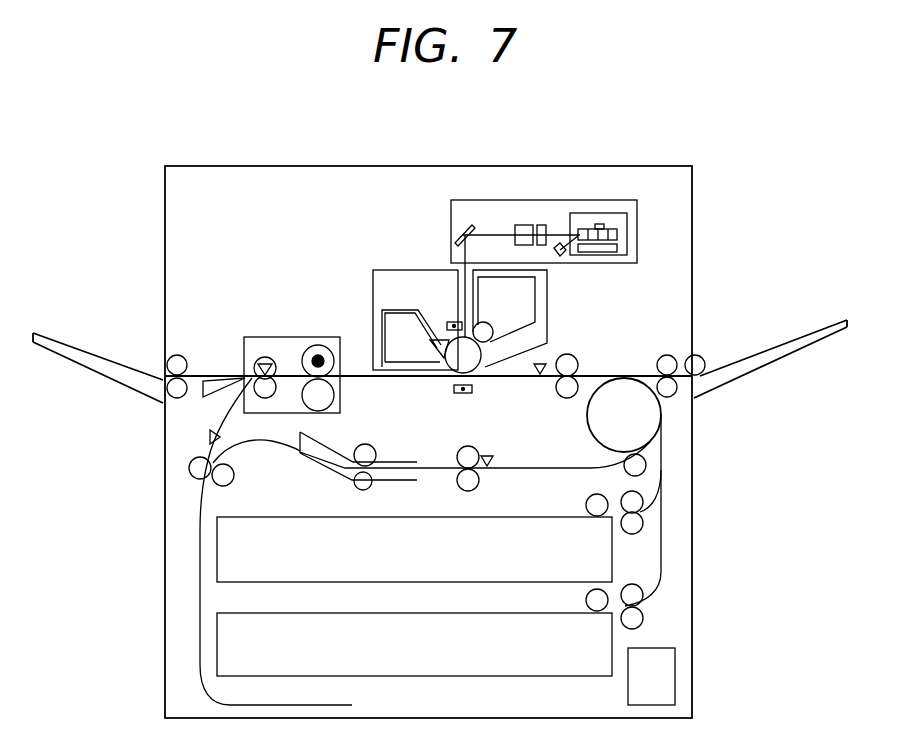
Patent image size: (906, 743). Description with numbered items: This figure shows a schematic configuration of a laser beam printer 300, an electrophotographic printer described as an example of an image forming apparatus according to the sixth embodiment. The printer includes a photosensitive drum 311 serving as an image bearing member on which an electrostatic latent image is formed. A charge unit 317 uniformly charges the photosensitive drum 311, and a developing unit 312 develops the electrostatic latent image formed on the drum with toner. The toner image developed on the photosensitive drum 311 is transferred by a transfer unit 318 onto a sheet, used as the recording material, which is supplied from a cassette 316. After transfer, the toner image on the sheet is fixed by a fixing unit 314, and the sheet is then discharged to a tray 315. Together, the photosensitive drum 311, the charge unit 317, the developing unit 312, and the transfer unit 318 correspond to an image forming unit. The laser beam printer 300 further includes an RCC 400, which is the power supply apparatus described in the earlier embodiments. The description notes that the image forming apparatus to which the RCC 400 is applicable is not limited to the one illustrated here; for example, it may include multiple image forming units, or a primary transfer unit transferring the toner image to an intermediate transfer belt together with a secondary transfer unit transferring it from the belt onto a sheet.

The laser beam printer 300 is at (592, 165).
The photosensitive drum 311 is at (480, 352).
The developing unit 312 is at (492, 327).
The fixing unit 314 is at (293, 337).
The tray 315 is at (88, 353).
The cassette 316 is at (592, 560).
The charge unit 317 is at (455, 322).
The transfer unit 318 is at (472, 389).
The RCC 400 is at (627, 680).